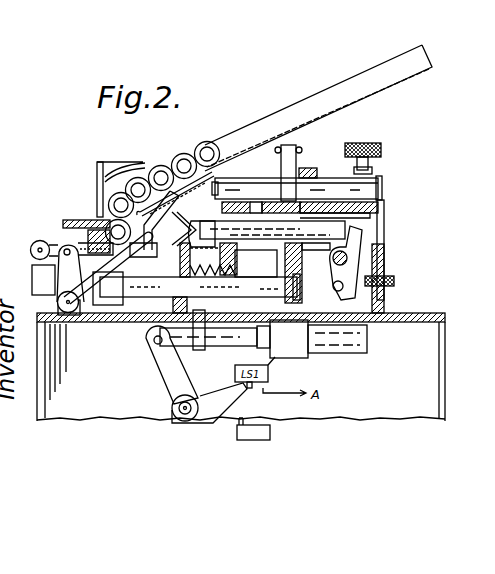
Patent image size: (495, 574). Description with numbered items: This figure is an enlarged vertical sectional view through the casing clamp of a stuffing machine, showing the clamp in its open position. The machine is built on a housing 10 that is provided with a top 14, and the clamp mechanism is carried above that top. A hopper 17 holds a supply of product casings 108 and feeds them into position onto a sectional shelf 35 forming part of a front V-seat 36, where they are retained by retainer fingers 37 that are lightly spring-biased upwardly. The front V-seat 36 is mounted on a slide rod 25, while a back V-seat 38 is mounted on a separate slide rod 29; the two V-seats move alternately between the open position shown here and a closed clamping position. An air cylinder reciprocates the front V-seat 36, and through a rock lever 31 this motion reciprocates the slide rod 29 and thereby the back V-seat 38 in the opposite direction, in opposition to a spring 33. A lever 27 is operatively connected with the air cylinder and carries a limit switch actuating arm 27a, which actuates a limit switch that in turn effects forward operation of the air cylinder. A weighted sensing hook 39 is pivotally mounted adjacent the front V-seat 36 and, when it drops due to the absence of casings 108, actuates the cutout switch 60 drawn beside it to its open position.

The housing 10 is at (432, 352).
The top 14 is at (412, 313).
The hopper 17 is at (375, 95).
The product receiving casing 108 is at (196, 152).
The front V-seat 36 is at (75, 219).
The stop member 60 is at (32, 272).
The retainer fingers 37 is at (72, 315).
The weighted sensing hook 39 is at (130, 256).
The sectional shelf 35 is at (148, 245).
The slide rod 25 is at (147, 297).
The back V-seat 38 is at (183, 223).
The spring 33 is at (250, 244).
The slide rod 29 is at (303, 243).
The rock lever 31 is at (352, 268).
The lever 27 is at (166, 376).
The limit switch actuating arm 27a is at (212, 400).